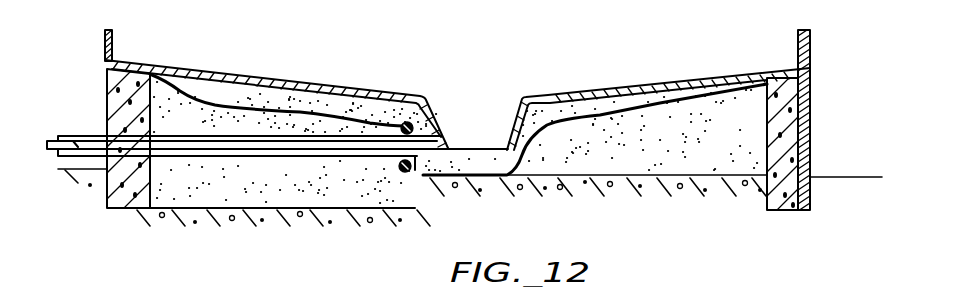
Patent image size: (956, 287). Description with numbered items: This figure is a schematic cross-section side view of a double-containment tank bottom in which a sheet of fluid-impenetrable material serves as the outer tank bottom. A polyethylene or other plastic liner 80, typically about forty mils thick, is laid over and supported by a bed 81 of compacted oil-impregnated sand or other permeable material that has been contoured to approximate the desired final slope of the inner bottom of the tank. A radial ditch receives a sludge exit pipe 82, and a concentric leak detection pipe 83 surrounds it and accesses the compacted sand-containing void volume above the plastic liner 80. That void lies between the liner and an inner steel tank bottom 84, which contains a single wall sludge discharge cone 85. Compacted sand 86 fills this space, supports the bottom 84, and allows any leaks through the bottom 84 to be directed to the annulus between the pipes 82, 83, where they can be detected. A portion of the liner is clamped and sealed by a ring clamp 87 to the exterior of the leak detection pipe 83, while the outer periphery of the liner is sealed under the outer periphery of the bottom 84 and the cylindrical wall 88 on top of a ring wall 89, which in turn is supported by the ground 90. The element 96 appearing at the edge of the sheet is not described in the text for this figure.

The concrete slab 80 is at (201, 100).
The curb wall 81 is at (810, 104).
The pipe 82 is at (75, 134).
The abutment wall 83 is at (88, 134).
The waterproof membrane 84 is at (233, 77).
The waterstop bulb upper 85 is at (437, 120).
The slab body 86 is at (337, 107).
The waterstop bulb lower 87 is at (417, 173).
The wall cap strip 88 is at (106, 52).
The wall liner strip 89 is at (810, 131).
The ground subgrade 90 is at (843, 180).
The adjacent element 96 is at (93, 286).